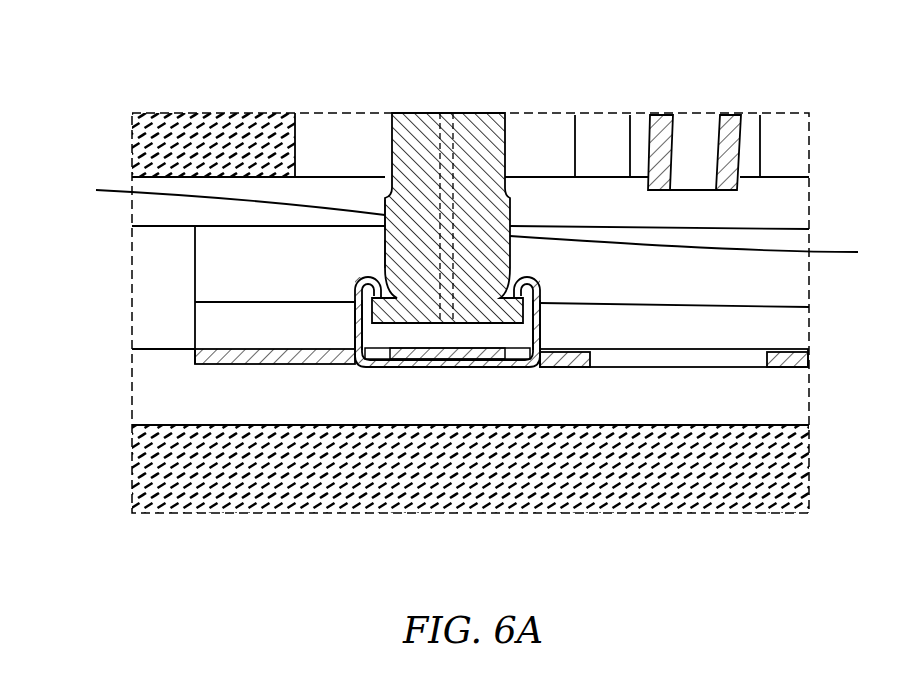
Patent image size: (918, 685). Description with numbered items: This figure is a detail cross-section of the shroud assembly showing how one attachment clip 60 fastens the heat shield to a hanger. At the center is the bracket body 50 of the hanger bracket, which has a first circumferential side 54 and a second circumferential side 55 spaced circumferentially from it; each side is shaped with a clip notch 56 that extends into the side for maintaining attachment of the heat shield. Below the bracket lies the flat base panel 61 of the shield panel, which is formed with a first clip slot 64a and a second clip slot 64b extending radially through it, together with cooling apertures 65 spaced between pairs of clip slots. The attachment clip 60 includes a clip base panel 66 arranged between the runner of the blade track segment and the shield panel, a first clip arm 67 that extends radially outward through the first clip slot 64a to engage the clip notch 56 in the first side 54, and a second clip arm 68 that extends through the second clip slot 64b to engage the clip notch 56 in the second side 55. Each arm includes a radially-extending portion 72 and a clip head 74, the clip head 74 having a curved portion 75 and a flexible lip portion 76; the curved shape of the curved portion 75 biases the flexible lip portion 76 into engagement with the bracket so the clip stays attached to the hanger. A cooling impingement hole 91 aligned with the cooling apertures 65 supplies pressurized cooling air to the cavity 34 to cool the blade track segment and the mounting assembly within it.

The cavity 34 is at (228, 277).
The bracket body 50 is at (517, 207).
The first circumferential side 54 is at (224, 196).
The second circumferential side 55 is at (698, 190).
The clip notch 56 is at (358, 272).
The attachment clip 60 is at (472, 403).
The flat base panel 61 is at (567, 367).
The first clip slot 64a is at (367, 375).
The second clip slot 64b is at (532, 375).
The cooling aperture 65 is at (714, 370).
The clip base panel 66 is at (453, 372).
The first clip arm 67 is at (349, 329).
The second clip arm 68 is at (550, 325).
The radially-extending portion 72 is at (355, 318).
The clip head 74 is at (349, 283).
The curved portion 75 is at (388, 195).
The flexible lip portion 76 is at (372, 285).
The cooling impingement hole 91 is at (463, 143).